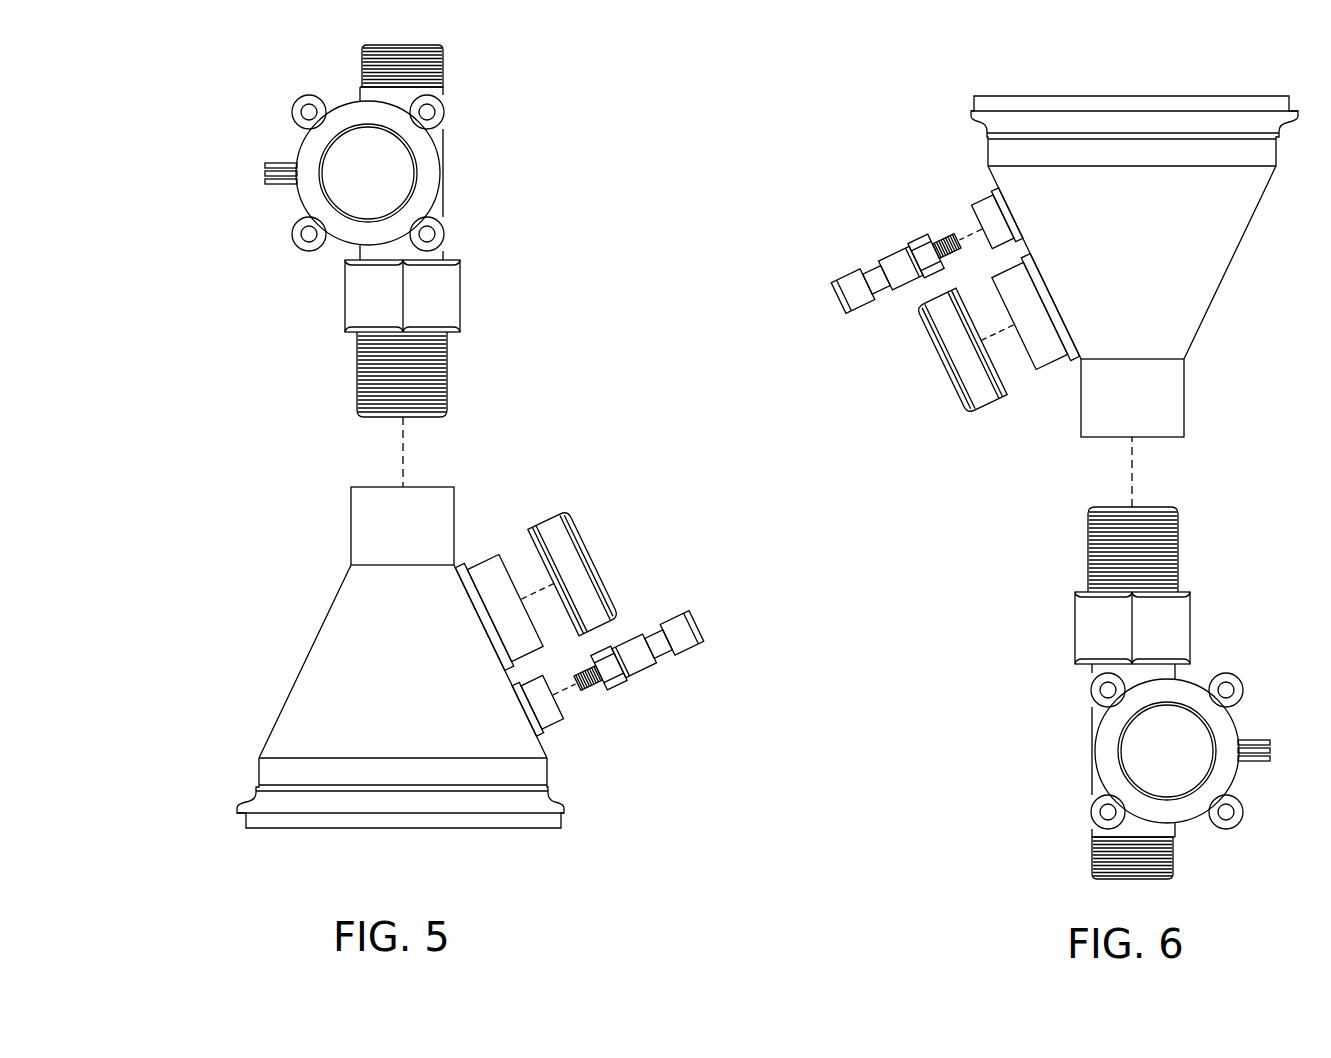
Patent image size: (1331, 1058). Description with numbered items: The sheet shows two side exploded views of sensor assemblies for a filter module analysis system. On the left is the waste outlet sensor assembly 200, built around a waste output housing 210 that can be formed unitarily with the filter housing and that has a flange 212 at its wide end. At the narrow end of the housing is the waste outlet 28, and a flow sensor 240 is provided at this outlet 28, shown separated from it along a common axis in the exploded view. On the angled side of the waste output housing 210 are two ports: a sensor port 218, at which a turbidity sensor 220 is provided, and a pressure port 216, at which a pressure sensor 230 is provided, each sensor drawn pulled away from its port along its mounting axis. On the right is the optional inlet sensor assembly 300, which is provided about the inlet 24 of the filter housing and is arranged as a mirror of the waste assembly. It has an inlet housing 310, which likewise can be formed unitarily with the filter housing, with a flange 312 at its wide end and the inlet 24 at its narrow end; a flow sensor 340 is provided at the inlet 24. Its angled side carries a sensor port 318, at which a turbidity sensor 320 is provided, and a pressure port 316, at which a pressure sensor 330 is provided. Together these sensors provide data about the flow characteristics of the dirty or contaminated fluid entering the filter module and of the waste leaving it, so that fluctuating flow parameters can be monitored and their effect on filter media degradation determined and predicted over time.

In FIG. 5, the waste outlet sensor assembly 200 is at (442, 475).
In FIG. 5, the flow sensor 240 is at (442, 162).
In FIG. 5, the waste outlet 28 is at (375, 519).
In FIG. 5, the waste output housing 210 is at (371, 618).
In FIG. 5, the mounting flange 212 is at (286, 826).
In FIG. 5, the sensor port 218 is at (481, 560).
In FIG. 5, the turbidity sensor 220 is at (581, 538).
In FIG. 5, the pressure port 216 is at (552, 725).
In FIG. 5, the pressure sensor 230 is at (708, 641).
In FIG. 6, the inlet sensor assembly 300 is at (1038, 488).
In FIG. 6, the flow sensor 340 is at (1172, 785).
In FIG. 6, the inlet 24 is at (1175, 437).
In FIG. 6, the inlet housing 310 is at (1195, 278).
In FIG. 6, the mounting flange 312 is at (1188, 95).
In FIG. 6, the sensor port 318 is at (1048, 367).
In FIG. 6, the turbidity sensor 320 is at (960, 387).
In FIG. 6, the pressure port 316 is at (985, 197).
In FIG. 6, the pressure sensor 330 is at (863, 252).